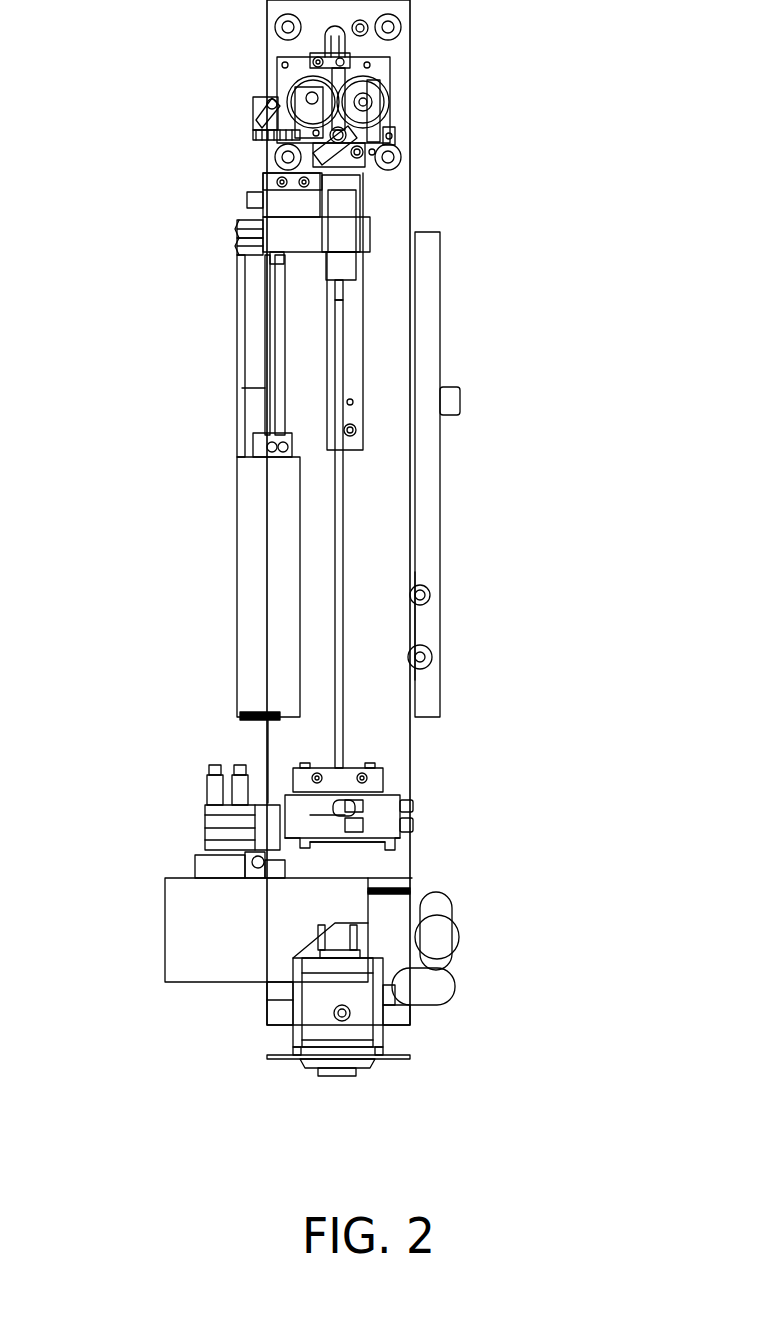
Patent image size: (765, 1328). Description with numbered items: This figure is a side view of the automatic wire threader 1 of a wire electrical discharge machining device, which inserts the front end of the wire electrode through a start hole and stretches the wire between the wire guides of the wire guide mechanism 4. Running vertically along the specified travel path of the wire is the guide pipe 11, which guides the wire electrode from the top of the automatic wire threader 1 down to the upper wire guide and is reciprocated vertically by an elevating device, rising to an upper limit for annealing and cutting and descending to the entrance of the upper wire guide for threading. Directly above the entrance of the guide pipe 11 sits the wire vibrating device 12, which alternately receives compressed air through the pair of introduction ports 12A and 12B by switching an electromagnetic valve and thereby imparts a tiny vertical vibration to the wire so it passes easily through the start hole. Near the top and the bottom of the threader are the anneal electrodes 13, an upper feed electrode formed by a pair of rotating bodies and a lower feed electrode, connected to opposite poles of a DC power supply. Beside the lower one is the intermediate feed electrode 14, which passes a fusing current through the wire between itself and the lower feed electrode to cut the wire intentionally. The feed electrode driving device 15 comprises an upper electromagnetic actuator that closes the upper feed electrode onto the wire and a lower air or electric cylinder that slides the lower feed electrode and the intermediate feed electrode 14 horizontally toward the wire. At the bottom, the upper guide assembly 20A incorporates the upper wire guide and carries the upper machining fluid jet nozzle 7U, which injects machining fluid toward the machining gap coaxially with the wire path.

The automatic wire threader 1 is at (550, 144).
The wire guide mechanism 4 is at (453, 1025).
The upper machining fluid jet nozzle 7U is at (360, 1072).
The guide pipe 11 is at (340, 342).
The wire vibrating device 12 is at (293, 223).
The introduction port 12A is at (240, 223).
The introduction port 12B is at (240, 242).
The anneal electrode 13 is at (385, 85).
The intermediate feed electrode 14 is at (365, 805).
The feed electrode driving device 15 is at (365, 163).
The upper guide assembly 20A is at (382, 1033).